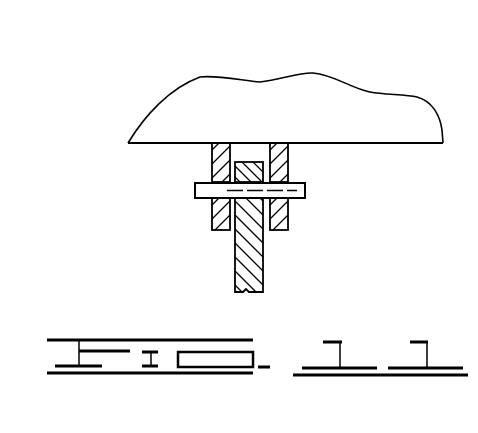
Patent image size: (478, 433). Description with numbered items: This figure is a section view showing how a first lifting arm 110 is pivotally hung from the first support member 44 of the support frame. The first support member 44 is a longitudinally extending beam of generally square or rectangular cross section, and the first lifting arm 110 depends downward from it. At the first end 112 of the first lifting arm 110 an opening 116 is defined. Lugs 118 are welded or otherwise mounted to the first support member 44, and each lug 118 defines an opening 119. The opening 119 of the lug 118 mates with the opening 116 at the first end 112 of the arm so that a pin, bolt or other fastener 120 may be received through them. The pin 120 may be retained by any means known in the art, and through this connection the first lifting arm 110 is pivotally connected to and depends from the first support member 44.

The first support member 44 is at (355, 102).
The first lifting arm 110 is at (234, 262).
The first end 112 is at (246, 162).
The opening 116 is at (287, 165).
The lug 118 is at (287, 218).
The opening 119 is at (213, 208).
The pin 120 is at (303, 190).